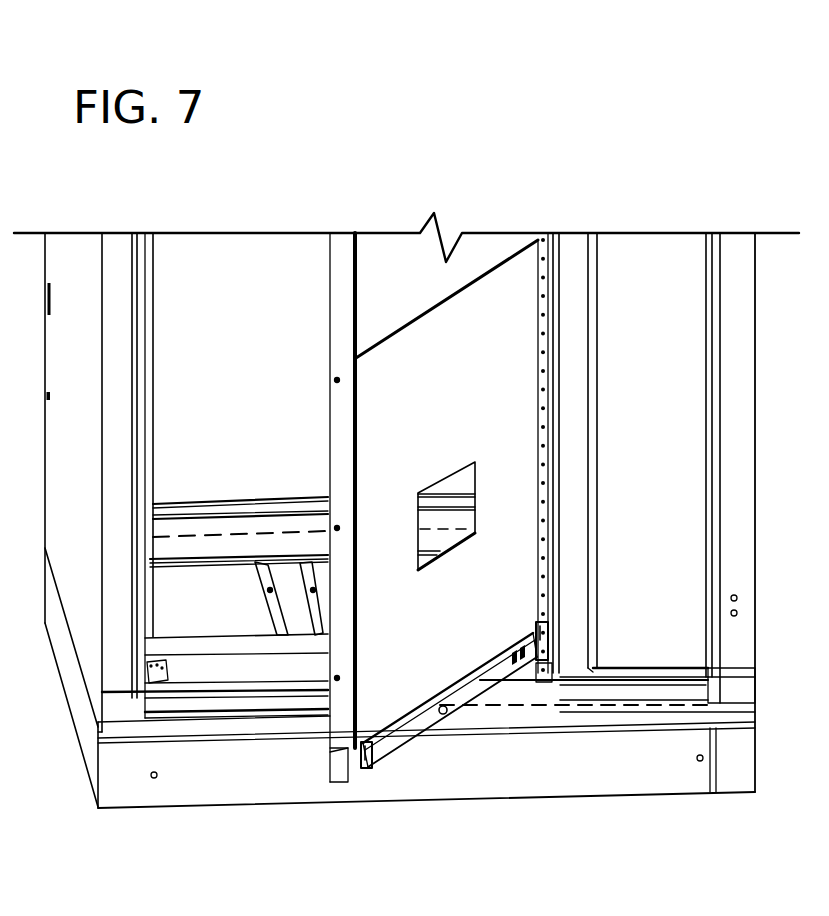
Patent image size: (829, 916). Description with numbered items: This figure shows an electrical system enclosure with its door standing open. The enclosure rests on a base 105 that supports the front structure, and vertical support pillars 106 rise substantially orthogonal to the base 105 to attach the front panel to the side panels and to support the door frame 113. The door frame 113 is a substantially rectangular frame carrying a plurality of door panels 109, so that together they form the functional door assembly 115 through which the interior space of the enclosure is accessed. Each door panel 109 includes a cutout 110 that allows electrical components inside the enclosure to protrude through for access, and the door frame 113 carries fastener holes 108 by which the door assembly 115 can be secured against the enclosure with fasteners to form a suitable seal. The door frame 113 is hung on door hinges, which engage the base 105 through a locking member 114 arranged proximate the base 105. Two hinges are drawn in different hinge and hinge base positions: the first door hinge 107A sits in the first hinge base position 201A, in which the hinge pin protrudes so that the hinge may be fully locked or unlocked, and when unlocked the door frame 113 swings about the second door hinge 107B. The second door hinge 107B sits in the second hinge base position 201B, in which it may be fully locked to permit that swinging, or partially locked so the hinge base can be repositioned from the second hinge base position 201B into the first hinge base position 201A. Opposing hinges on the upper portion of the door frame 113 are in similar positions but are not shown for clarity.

The base 105 is at (523, 773).
The vertical support pillar 106 is at (89, 496).
The first door hinge 107A is at (369, 726).
The second door hinge 107B is at (527, 630).
The fastener hole 108 is at (441, 704).
The door panel 109 is at (487, 591).
The cutout 110 is at (462, 521).
The door frame 113 is at (470, 688).
The locking member 114 is at (247, 631).
The functional door assembly 115 is at (318, 428).
The first hinge base position 201A is at (176, 664).
The second hinge base position 201B is at (551, 692).